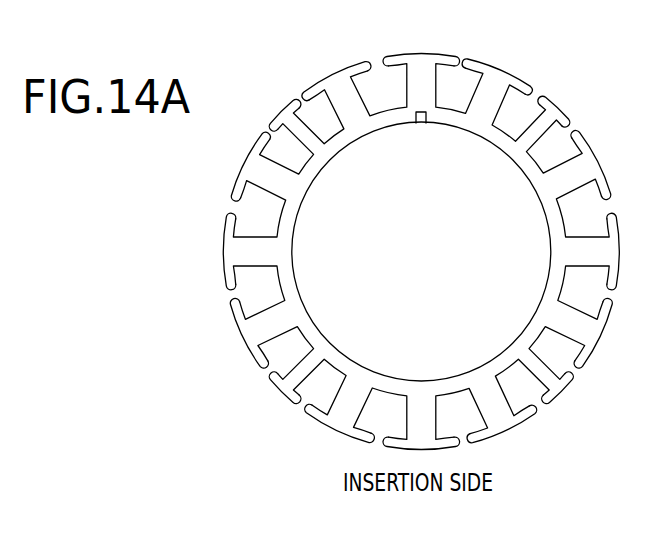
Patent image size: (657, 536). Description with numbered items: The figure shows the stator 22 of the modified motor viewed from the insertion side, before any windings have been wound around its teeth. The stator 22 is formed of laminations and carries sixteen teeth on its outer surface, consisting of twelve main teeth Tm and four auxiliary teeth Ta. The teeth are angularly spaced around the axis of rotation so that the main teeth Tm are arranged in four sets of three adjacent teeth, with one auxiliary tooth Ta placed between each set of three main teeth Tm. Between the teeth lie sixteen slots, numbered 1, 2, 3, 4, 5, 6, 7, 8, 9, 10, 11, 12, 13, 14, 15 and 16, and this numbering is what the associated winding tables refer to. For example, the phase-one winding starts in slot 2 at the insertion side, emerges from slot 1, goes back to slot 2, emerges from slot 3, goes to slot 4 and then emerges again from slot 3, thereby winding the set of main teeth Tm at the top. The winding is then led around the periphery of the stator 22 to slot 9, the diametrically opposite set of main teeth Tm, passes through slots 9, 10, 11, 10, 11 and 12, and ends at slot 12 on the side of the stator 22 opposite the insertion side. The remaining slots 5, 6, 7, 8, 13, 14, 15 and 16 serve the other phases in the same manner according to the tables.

The slot 1 is at (318, 117).
The slot 2 is at (378, 90).
The slot 3 is at (459, 89).
The slot 4 is at (518, 113).
The slot 5 is at (554, 146).
The slot 6 is at (582, 208).
The slot 7 is at (583, 292).
The slot 8 is at (557, 353).
The slot 9 is at (522, 387).
The slot 10 is at (462, 413).
The slot 11 is at (380, 413).
The slot 12 is at (319, 387).
The slot 13 is at (286, 353).
The slot 14 is at (258, 292).
The slot 15 is at (259, 209).
The slot 16 is at (287, 149).
The stator 22 is at (534, 72).
The main teeth Tm is at (446, 54).
The auxiliary teeth Ta is at (560, 103).